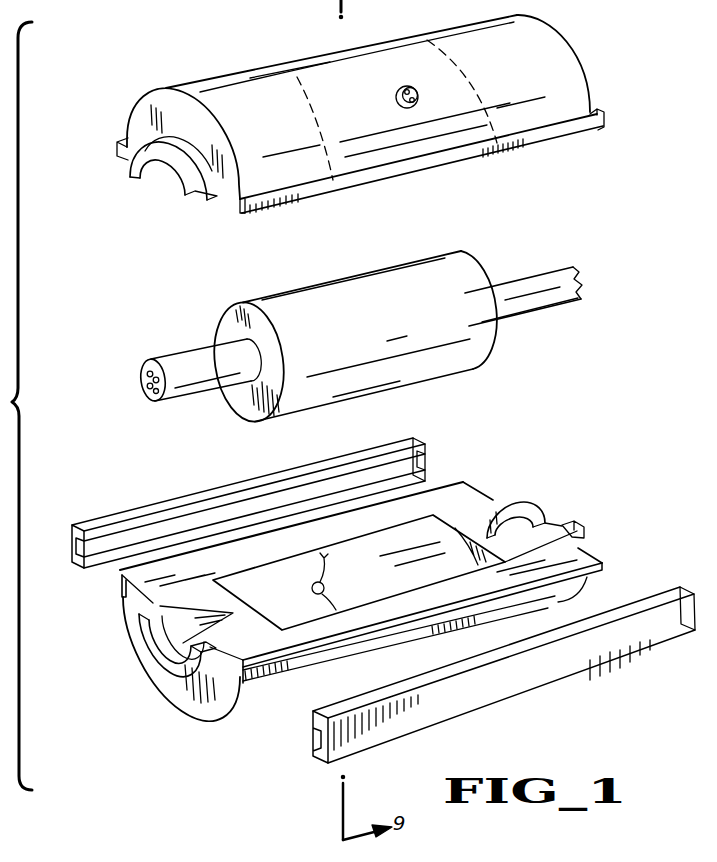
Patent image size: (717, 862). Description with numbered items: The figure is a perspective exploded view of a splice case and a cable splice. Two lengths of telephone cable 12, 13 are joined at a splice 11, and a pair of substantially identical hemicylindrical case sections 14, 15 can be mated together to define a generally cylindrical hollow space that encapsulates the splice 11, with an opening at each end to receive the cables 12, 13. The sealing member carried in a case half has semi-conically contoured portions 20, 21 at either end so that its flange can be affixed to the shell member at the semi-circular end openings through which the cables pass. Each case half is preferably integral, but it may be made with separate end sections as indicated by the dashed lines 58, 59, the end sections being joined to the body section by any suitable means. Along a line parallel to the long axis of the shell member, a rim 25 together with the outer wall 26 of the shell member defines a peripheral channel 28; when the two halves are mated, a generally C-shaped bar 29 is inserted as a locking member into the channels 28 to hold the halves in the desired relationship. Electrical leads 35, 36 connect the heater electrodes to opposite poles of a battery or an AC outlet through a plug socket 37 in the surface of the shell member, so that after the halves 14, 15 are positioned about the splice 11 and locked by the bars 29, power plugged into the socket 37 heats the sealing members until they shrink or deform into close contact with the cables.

The splice 11 is at (460, 360).
The telephone cable 12 is at (197, 383).
The telephone cable 13 is at (545, 297).
The hemicylindrical case section 14 is at (262, 58).
The hemicylindrical case section 15 is at (297, 702).
The semi-conically contoured portion 20 is at (153, 647).
The semi-conically contoured portion 21 is at (490, 530).
The rim 25 is at (421, 167).
The outer wall 26 is at (243, 165).
The peripheral channel 28 is at (240, 212).
The C-shaped bar 29 is at (297, 468).
The electrical lead 35 is at (331, 603).
The electrical lead 36 is at (322, 576).
The plug socket 37 is at (418, 92).
The dashed line 58 is at (297, 77).
The dashed line 59 is at (427, 40).